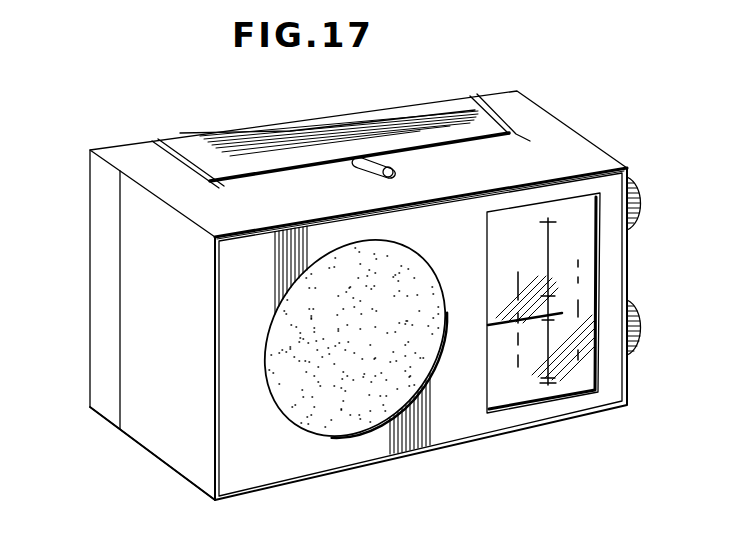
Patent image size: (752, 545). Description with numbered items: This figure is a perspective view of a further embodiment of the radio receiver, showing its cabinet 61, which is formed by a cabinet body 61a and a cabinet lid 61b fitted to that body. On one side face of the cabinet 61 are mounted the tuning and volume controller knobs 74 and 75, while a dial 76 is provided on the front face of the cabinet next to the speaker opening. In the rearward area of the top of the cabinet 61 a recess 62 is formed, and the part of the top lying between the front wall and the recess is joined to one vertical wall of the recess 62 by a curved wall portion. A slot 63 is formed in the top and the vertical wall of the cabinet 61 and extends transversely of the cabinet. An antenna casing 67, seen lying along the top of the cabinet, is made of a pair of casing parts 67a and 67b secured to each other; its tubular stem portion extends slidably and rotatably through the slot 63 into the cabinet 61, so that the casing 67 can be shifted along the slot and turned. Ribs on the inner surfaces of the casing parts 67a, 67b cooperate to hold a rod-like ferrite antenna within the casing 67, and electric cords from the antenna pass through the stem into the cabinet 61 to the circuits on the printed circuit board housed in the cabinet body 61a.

The cabinet 61 is at (375, 453).
The cabinet body 61a is at (152, 449).
The cabinet lid 61b is at (98, 326).
The recess 62 is at (490, 113).
The slot 63 is at (398, 167).
The antenna casing 67 is at (222, 124).
The casing part 67a is at (350, 133).
The casing part 67b is at (275, 129).
The tuning controller knob 74 is at (640, 199).
The volume controller knob 75 is at (640, 316).
The dial 76 is at (555, 392).